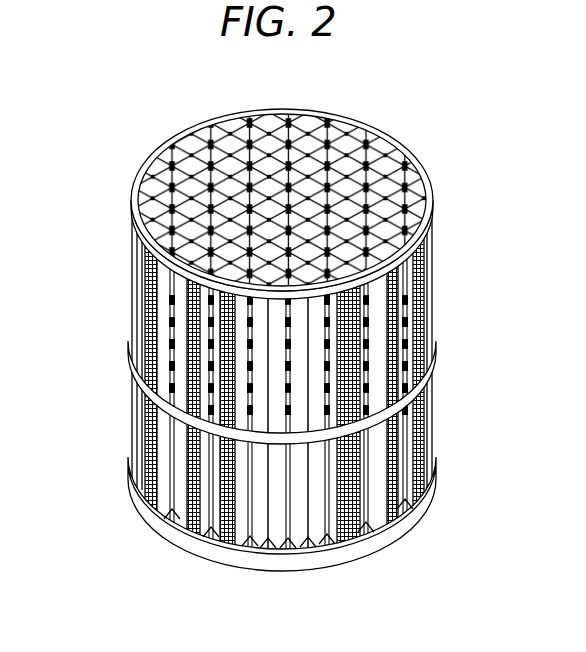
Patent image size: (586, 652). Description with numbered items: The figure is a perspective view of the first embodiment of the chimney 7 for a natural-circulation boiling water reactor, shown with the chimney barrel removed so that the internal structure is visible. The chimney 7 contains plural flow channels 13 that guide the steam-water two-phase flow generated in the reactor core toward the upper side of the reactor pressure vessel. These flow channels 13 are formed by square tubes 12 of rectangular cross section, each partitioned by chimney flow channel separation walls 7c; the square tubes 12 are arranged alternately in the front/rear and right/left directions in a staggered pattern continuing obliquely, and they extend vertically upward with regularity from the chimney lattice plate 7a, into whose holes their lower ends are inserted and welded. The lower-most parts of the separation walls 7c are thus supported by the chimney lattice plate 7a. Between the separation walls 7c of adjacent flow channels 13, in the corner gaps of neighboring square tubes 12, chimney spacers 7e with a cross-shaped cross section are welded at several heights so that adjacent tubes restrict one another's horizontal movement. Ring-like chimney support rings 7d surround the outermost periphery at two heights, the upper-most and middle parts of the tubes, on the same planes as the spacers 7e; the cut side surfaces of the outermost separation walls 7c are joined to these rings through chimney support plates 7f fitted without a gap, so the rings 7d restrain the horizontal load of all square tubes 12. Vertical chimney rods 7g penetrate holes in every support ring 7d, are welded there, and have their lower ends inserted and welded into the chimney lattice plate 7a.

The chimney 7 is at (285, 362).
The chimney lattice plate 7a is at (147, 518).
The chimney flow channel separation wall 7c is at (298, 533).
The chimney support ring 7d is at (133, 220).
The chimney spacer 7e is at (365, 142).
The chimney support plate 7f is at (230, 535).
The chimney rod 7g is at (430, 298).
The square tube 12 is at (308, 530).
The flow channel 13 is at (387, 160).